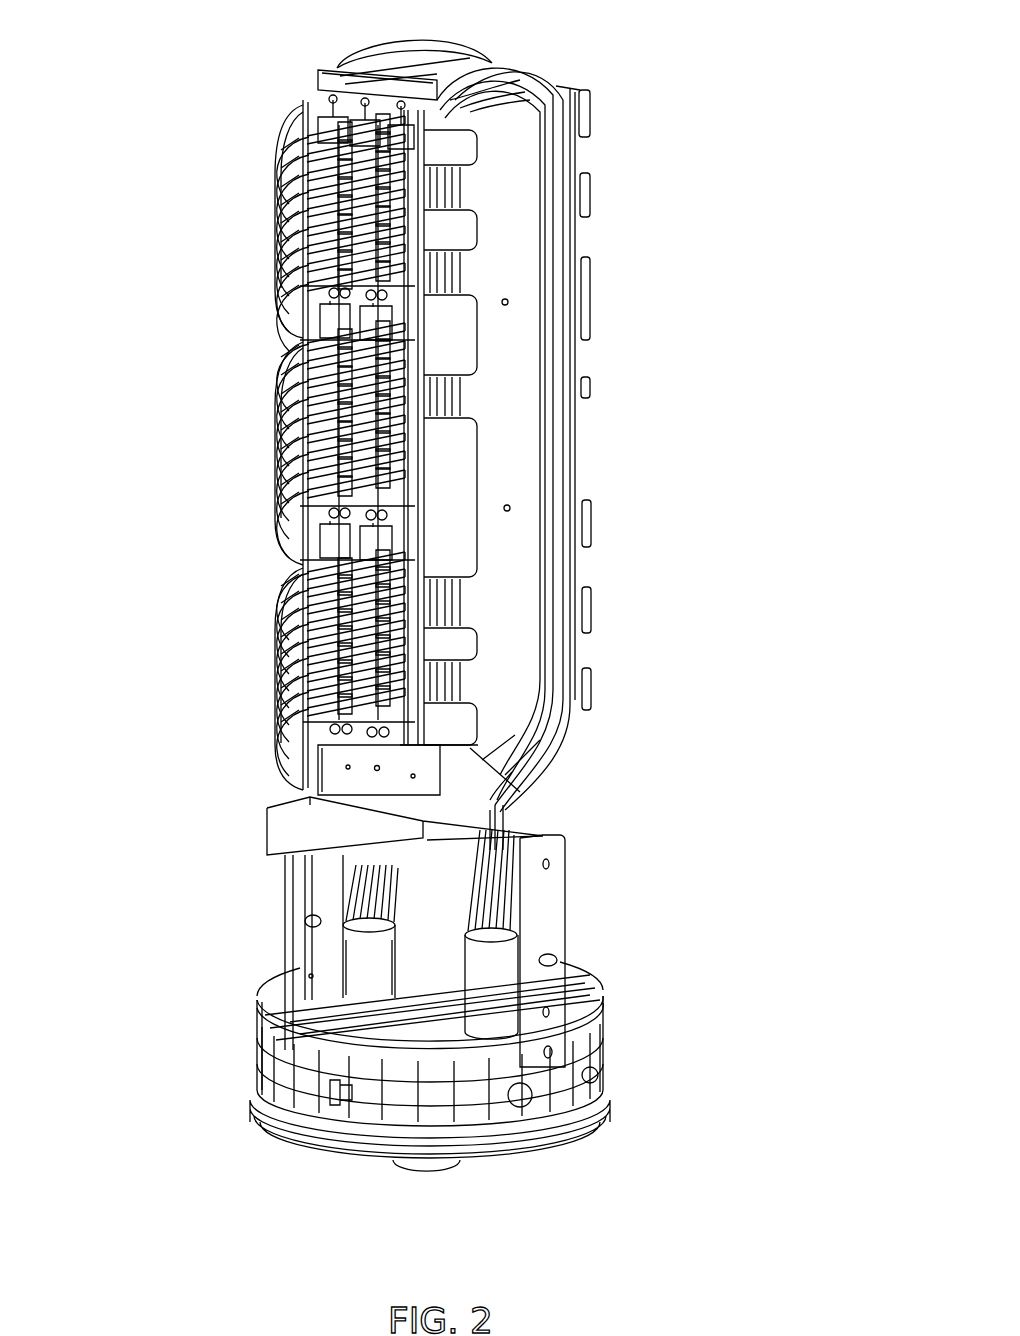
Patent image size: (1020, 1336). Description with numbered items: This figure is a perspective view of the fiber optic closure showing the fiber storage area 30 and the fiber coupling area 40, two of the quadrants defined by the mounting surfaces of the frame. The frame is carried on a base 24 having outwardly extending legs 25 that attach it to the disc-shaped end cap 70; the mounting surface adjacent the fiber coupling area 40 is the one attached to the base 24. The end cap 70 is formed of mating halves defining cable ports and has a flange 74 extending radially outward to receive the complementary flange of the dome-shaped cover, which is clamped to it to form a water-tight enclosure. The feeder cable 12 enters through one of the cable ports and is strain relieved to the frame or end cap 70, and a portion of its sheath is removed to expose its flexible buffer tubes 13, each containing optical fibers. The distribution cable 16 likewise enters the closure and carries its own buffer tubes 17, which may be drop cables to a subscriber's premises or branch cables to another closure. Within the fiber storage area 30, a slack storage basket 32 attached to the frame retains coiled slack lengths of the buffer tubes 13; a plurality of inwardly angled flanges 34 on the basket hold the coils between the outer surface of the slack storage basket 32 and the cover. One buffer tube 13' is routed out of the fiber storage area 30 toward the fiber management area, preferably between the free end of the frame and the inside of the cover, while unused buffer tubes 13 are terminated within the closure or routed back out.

The feeder cable 12 is at (493, 980).
The buffer tubes 13 is at (634, 448).
The buffer tube 13' is at (474, 45).
The distribution cable 16 is at (370, 965).
The buffer tubes 17 is at (345, 902).
The base 24 is at (285, 832).
The legs 25 is at (548, 987).
The fiber storage area 30 is at (673, 264).
The slack storage basket 32 is at (523, 628).
The outer flange 34 is at (455, 527).
The fiber coupling area 40 is at (212, 397).
The end cap 70 is at (603, 1052).
The flange 74 is at (357, 1155).